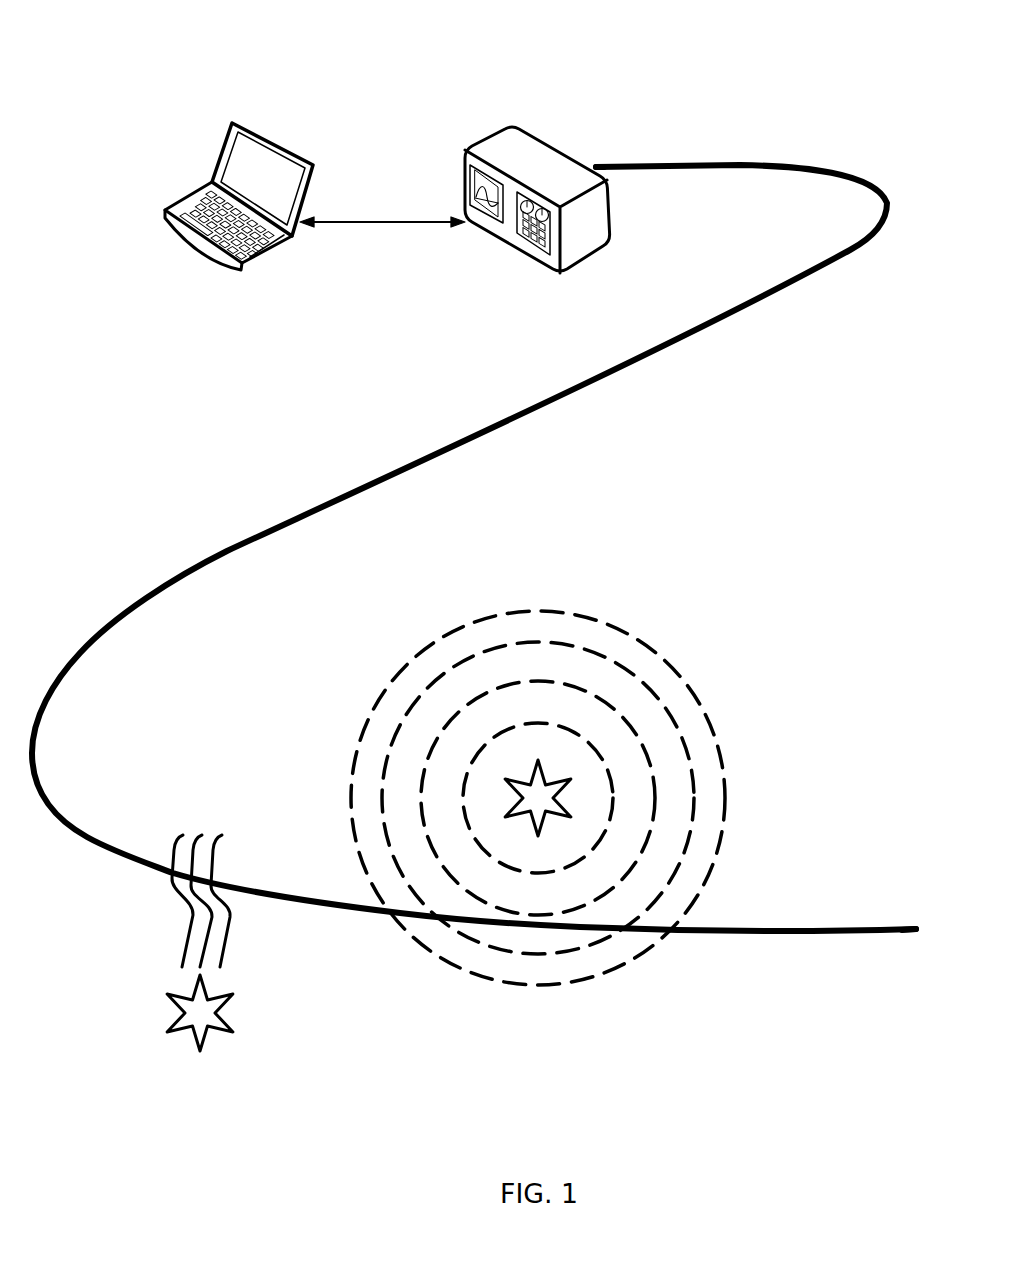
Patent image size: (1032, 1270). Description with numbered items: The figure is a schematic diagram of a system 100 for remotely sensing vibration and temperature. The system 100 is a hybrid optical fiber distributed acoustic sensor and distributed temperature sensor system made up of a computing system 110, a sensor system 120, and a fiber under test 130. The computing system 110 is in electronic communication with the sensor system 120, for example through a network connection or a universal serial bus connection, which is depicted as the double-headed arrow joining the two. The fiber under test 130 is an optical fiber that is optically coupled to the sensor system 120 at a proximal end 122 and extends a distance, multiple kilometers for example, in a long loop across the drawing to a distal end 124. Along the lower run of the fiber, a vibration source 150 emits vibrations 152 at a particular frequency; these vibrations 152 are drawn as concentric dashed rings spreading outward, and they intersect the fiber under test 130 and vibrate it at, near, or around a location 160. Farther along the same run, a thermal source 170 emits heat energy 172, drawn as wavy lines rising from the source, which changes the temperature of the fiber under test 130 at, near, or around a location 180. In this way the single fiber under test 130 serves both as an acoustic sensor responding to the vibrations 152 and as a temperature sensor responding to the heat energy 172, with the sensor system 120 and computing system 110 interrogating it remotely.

The system 100 is at (118, 40).
The computing system 110 is at (187, 241).
The sensor system 120 is at (507, 247).
The proximal end 122 is at (596, 164).
The distal end 124 is at (913, 932).
The fiber under test 130 is at (692, 330).
The vibration source 150 is at (553, 787).
The vibrations 152 is at (727, 790).
The location 160 is at (534, 931).
The thermal source 170 is at (180, 1008).
The heat energy 172 is at (190, 937).
The location 180 is at (227, 893).